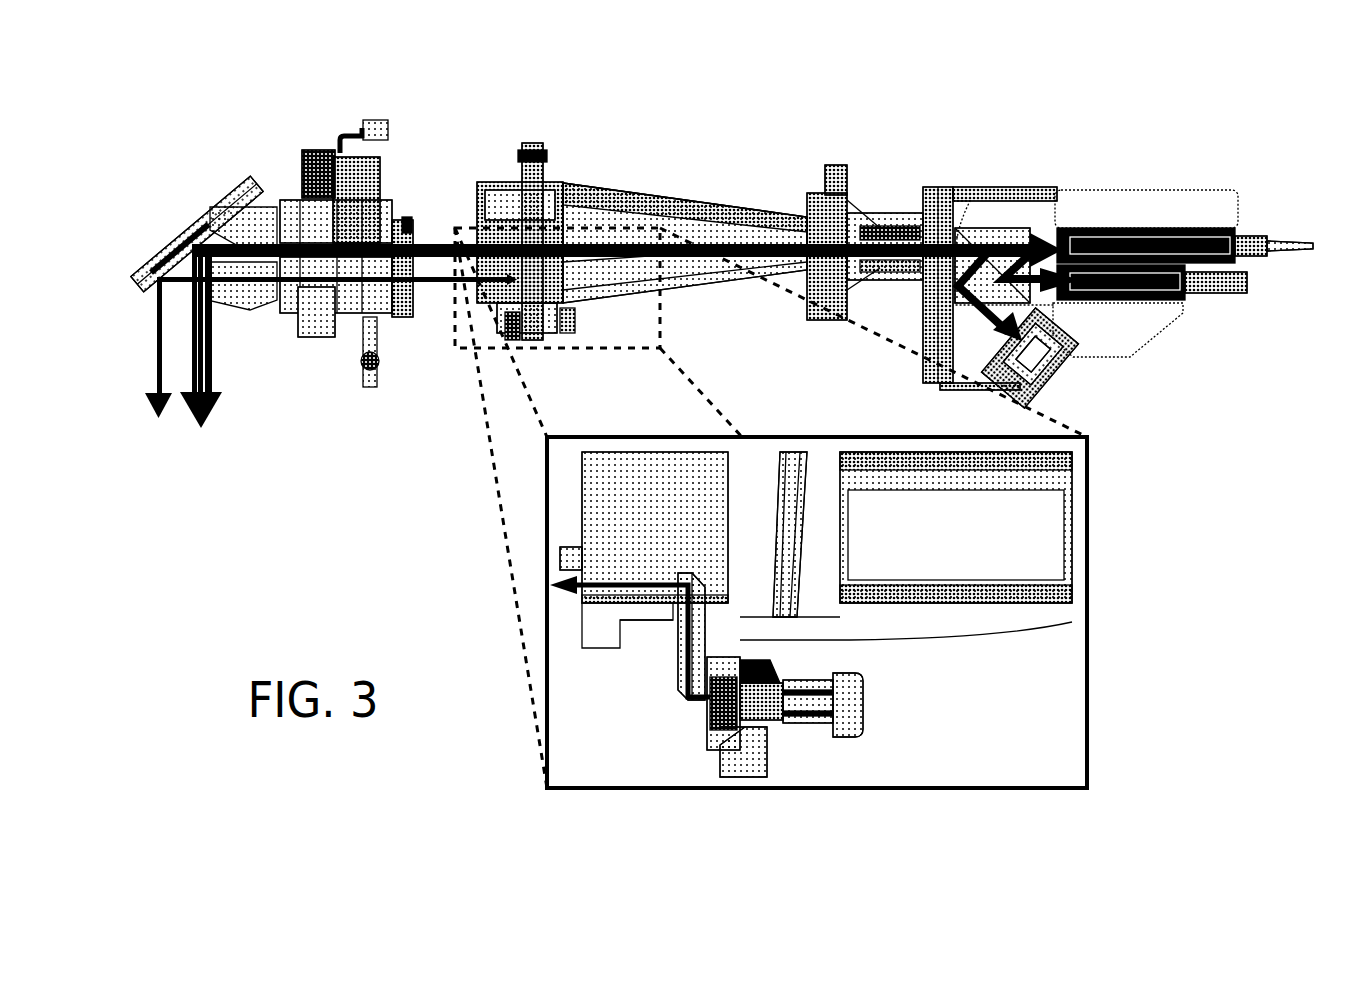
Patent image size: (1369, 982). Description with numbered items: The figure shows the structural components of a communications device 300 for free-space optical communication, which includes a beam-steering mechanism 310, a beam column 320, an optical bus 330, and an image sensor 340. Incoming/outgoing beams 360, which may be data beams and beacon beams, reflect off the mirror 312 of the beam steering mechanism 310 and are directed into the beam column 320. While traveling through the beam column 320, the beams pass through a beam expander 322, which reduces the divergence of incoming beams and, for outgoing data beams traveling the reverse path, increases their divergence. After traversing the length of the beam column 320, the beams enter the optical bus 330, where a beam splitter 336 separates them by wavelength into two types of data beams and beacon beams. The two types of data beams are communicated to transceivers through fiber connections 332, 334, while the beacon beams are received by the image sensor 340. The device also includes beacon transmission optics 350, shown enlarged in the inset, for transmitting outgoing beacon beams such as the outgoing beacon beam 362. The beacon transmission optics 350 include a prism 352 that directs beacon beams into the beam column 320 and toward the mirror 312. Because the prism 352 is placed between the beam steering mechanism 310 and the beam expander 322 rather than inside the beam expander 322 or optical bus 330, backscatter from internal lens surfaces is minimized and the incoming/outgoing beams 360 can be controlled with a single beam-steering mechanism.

The communications device 300 is at (374, 433).
The beam-steering mechanism 310 is at (135, 135).
The mirror 312 is at (212, 219).
The beam column 320 is at (938, 90).
The beam expander 322 is at (833, 140).
The optical bus 330 is at (1297, 116).
The fiber connection 332 is at (1313, 246).
The fiber connection 334 is at (1250, 282).
The beam splitter 336 is at (1007, 237).
The image sensor 340 is at (1043, 368).
The beacon transmission optics 350 is at (893, 800).
The prism 352 is at (684, 678).
The incoming/outgoing beams 360 is at (133, 428).
The outgoing beacon beam 362 is at (628, 582).